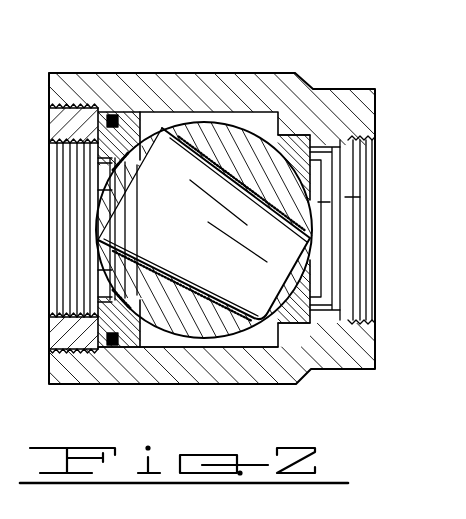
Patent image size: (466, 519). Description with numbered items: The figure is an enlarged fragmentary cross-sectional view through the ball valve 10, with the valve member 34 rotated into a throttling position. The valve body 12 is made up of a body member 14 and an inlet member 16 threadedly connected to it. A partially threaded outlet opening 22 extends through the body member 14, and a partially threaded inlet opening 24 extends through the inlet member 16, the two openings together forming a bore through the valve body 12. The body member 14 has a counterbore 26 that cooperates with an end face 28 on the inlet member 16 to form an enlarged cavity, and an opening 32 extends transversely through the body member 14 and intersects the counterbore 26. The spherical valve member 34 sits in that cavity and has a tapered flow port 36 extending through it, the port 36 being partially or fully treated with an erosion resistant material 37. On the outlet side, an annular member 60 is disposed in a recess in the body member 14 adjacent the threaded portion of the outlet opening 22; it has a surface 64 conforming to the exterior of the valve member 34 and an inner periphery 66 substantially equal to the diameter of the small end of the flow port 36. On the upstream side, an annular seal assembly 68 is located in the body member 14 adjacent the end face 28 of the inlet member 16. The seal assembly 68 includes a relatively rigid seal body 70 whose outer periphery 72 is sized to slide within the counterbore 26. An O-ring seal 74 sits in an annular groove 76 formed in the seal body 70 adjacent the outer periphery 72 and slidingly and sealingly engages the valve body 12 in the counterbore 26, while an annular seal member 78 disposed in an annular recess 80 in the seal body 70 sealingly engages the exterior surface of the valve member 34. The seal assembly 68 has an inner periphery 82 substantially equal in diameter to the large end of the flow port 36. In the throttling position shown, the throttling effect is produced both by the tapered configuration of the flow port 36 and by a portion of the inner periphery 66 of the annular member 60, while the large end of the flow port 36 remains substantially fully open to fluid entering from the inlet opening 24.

The ball valve 10 is at (297, 52).
The valve body 12 is at (287, 386).
The body member 14 is at (193, 386).
The inlet member 16 is at (62, 338).
The outlet opening 22 is at (366, 197).
The inlet opening 24 is at (58, 242).
The counterbore 26 is at (247, 345).
The end face 28 is at (100, 134).
The opening 32 is at (5, 215).
The valve member 34 is at (178, 284).
The tapered flow port 36 is at (200, 244).
The erosion resistant material 37 is at (212, 296).
The annular member 60 is at (296, 136).
The surface 64 is at (290, 160).
The inner periphery 66 is at (310, 280).
The annular seal assembly 68 is at (148, 334).
The seal body 70 is at (104, 318).
The outer periphery 72 is at (134, 347).
The O-ring seal 74 is at (106, 350).
The annular groove 76 is at (107, 359).
The annular seal member 78 is at (120, 181).
The annular recess 80 is at (122, 121).
The inner periphery 82 is at (100, 168).